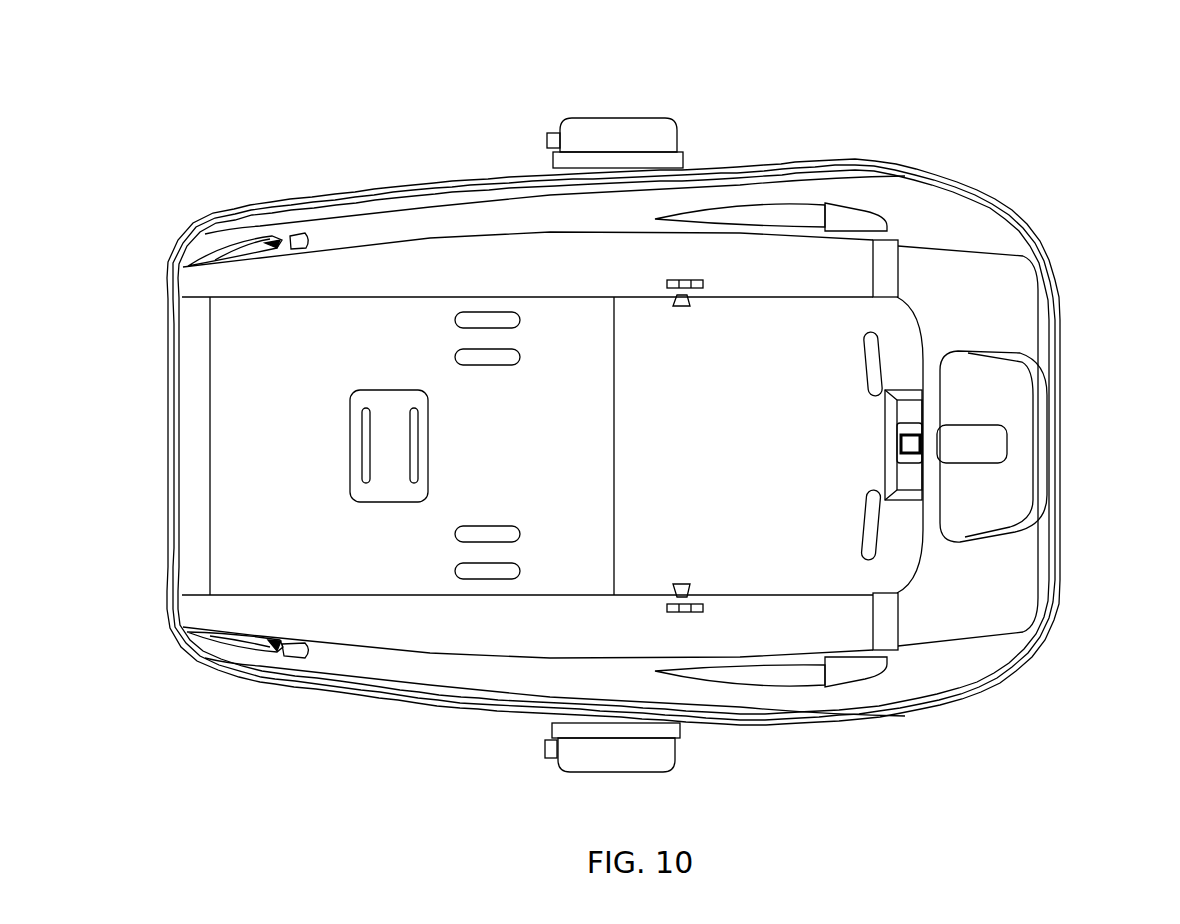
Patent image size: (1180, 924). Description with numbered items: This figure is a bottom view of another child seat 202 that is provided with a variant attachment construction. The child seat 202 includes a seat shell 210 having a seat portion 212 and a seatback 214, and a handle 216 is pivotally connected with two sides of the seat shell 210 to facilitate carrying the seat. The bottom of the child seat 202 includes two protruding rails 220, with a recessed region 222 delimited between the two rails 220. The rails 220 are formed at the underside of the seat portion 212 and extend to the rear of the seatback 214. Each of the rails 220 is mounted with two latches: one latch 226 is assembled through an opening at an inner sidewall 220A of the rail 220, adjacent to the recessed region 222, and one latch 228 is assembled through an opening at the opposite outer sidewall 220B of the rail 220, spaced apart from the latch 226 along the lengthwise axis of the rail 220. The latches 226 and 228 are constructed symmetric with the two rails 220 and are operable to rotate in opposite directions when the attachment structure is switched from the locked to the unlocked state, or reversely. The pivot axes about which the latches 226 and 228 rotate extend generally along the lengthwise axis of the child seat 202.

The child seat 202 is at (1052, 82).
The seat shell 210 is at (408, 218).
The seat portion 212 is at (247, 360).
The seatback 214 is at (928, 292).
The handle 216 is at (612, 128).
The rails 220 is at (455, 258).
The inner sidewall 220A is at (553, 298).
The outer sidewall 220B is at (298, 237).
The recessed region 222 is at (477, 455).
The latch 226 is at (677, 300).
The latch 228 is at (270, 246).